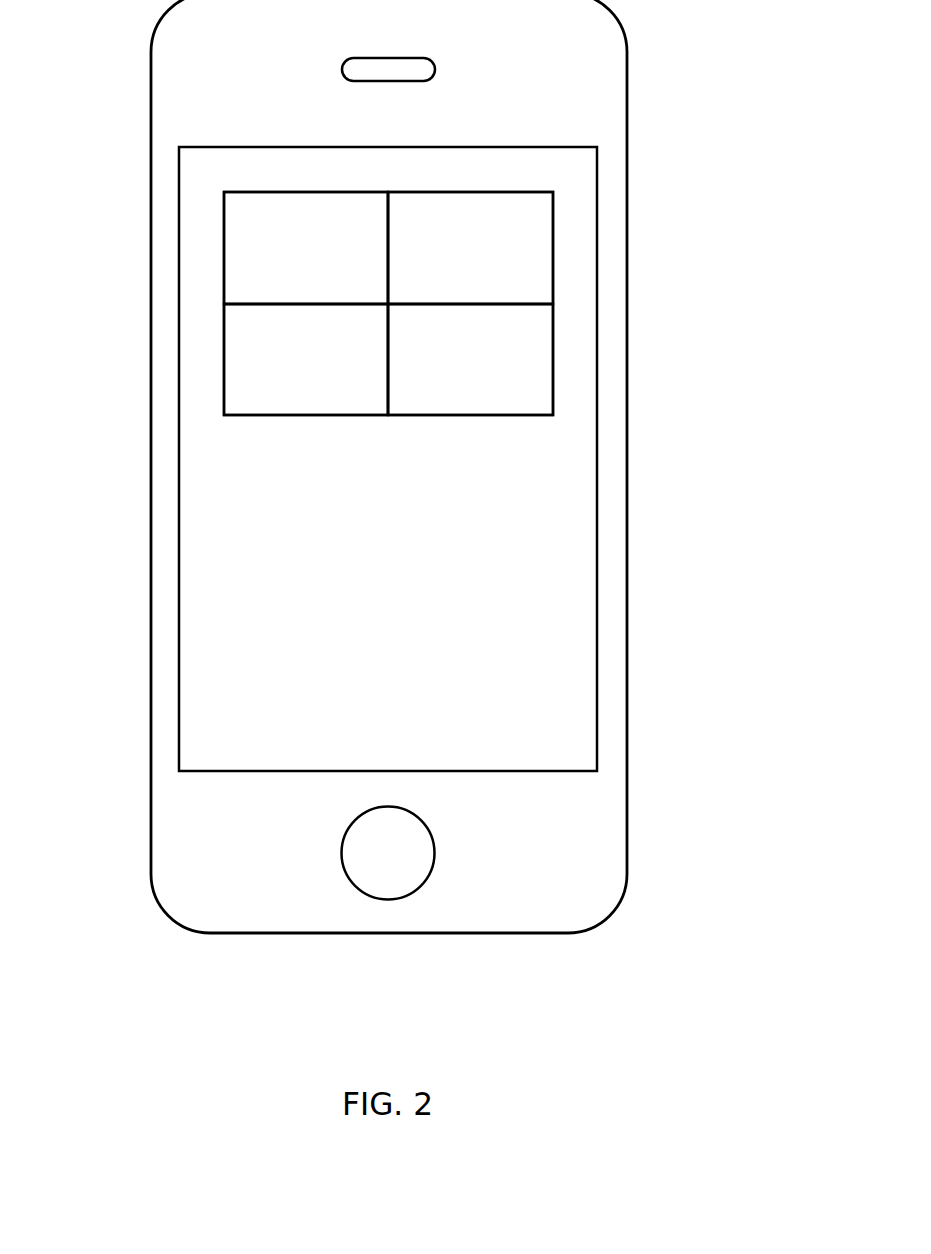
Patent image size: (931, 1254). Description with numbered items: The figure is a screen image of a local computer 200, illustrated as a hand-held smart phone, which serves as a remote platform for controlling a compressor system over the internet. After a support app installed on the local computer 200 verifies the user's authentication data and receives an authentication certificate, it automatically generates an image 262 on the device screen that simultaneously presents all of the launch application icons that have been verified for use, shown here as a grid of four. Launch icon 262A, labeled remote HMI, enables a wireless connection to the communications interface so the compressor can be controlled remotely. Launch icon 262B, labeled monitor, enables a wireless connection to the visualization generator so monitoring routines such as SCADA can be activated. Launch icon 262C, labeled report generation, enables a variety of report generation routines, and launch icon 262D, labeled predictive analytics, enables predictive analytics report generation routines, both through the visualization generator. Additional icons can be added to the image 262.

The local computer 200 is at (627, 210).
The image 262 is at (262, 168).
The launch icon 262A is at (247, 262).
The launch icon 262B is at (532, 230).
The launch icon 262C is at (235, 351).
The launch icon 262D is at (538, 367).